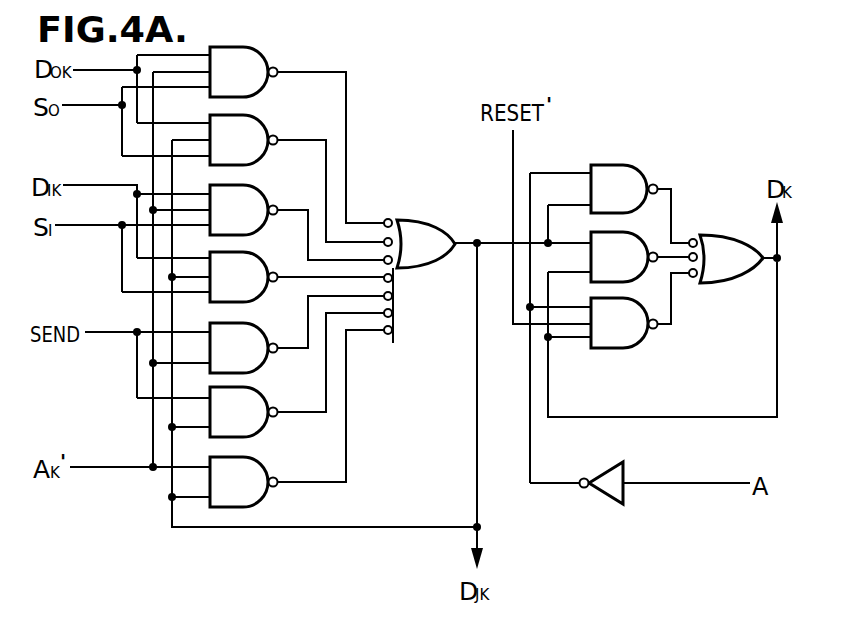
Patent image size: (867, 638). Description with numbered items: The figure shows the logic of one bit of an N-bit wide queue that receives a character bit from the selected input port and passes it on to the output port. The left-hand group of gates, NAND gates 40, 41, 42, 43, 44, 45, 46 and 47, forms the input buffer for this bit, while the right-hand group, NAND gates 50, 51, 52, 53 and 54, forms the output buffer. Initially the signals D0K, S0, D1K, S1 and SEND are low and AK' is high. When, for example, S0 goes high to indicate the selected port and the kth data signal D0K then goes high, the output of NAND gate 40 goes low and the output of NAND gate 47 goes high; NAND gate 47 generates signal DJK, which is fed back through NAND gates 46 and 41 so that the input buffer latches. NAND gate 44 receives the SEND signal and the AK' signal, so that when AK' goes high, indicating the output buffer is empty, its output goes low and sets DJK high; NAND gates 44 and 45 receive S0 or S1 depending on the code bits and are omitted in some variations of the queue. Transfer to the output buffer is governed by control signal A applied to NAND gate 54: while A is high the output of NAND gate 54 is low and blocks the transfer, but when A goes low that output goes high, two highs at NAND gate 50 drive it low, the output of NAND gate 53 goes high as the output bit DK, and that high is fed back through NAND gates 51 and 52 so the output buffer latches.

The NAND gate 40 is at (244, 87).
The NAND gate 41 is at (244, 155).
The NAND gate 42 is at (244, 225).
The NAND gate 43 is at (244, 292).
The NAND gate 44 is at (244, 363).
The NAND gate 45 is at (244, 427).
The NAND gate 46 is at (244, 497).
The NAND gate 47 is at (431, 259).
The NAND gate 50 is at (625, 204).
The NAND gate 51 is at (625, 272).
The NAND gate 52 is at (625, 339).
The NAND gate 53 is at (738, 274).
The NAND gate 54 is at (606, 494).